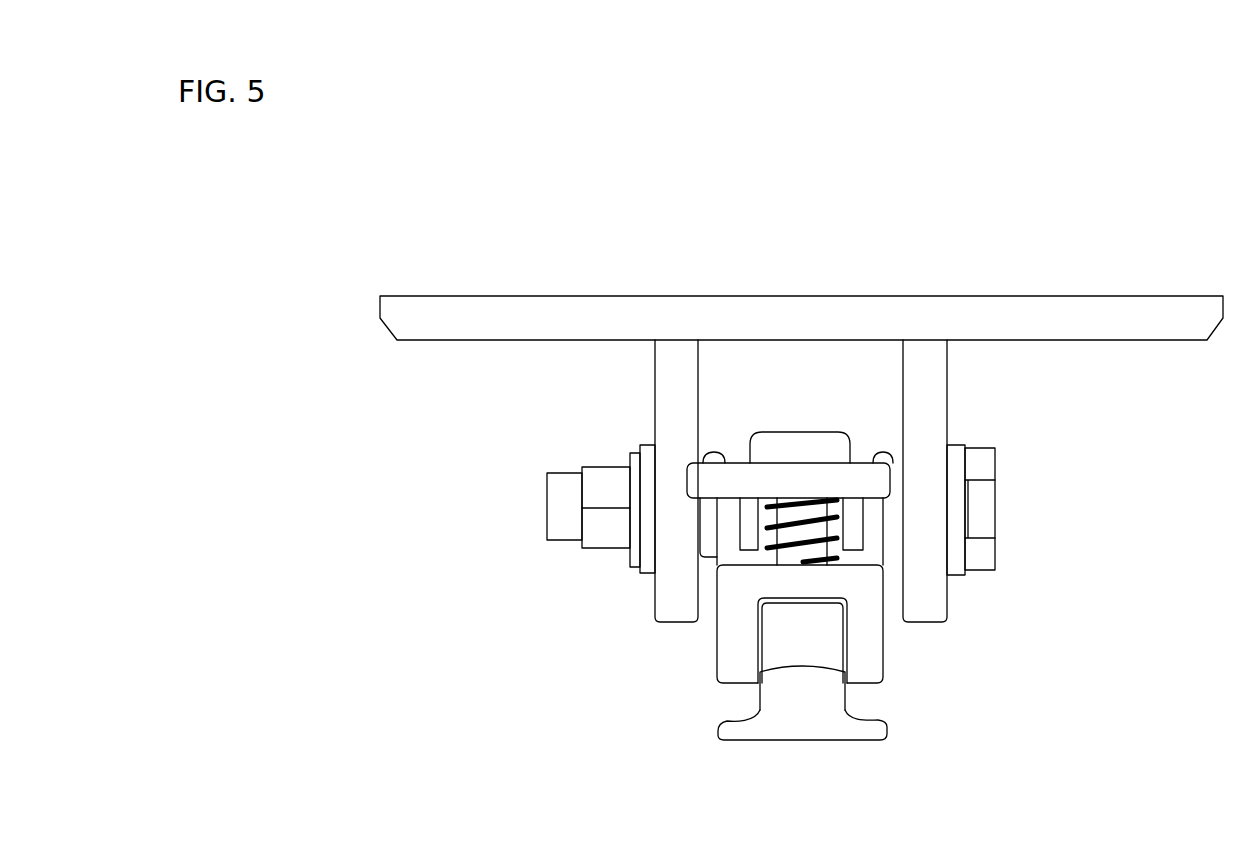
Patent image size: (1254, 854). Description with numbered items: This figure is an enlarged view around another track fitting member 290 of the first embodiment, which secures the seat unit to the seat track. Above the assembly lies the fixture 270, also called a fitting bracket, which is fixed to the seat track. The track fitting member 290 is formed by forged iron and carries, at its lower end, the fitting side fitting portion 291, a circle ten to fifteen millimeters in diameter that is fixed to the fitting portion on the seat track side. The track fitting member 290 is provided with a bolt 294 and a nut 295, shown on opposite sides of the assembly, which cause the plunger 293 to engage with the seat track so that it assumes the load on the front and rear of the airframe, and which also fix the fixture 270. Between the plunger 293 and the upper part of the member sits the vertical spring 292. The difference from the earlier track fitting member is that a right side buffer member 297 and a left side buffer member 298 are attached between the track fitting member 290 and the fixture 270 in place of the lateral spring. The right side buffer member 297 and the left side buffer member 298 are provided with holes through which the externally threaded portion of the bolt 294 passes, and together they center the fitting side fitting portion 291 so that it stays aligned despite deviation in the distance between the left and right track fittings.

The fixture 270 is at (1075, 315).
The track fitting member 290 is at (707, 488).
The fitting side fitting portion 291 is at (778, 732).
The vertical spring 292 is at (790, 527).
The plunger 293 is at (727, 665).
The bolt 294 is at (988, 523).
The nut 295 is at (597, 537).
The right side buffer member 297 is at (893, 542).
The left side buffer member 298 is at (712, 538).